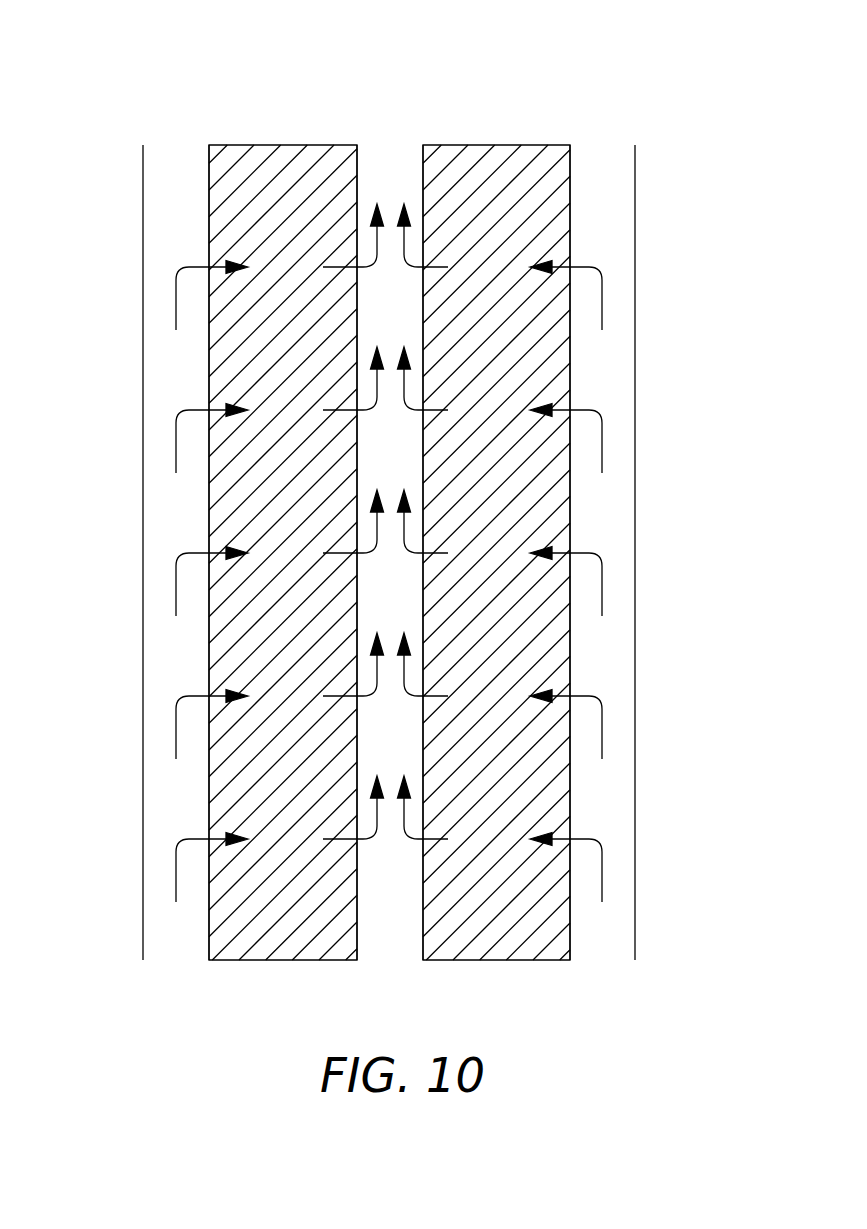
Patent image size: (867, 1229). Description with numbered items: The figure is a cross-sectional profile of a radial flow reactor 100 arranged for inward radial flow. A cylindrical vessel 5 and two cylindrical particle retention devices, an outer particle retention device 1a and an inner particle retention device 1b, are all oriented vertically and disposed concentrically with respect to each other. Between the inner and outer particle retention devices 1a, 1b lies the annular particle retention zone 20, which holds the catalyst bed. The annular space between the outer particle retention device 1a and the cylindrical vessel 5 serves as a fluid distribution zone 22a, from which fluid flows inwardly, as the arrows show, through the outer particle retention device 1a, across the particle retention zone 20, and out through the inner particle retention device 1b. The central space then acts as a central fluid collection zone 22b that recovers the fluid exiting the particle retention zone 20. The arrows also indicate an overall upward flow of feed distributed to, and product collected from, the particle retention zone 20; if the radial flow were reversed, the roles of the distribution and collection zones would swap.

The radial flow reactor 100 is at (690, 87).
The cylindrical vessel 5 is at (636, 335).
The particle retention zone 20 is at (233, 505).
The outer particle retention device 1a is at (208, 178).
The inner particle retention device 1b is at (357, 148).
The fluid distribution zone 22a is at (167, 362).
The central fluid collection zone 22b is at (381, 937).